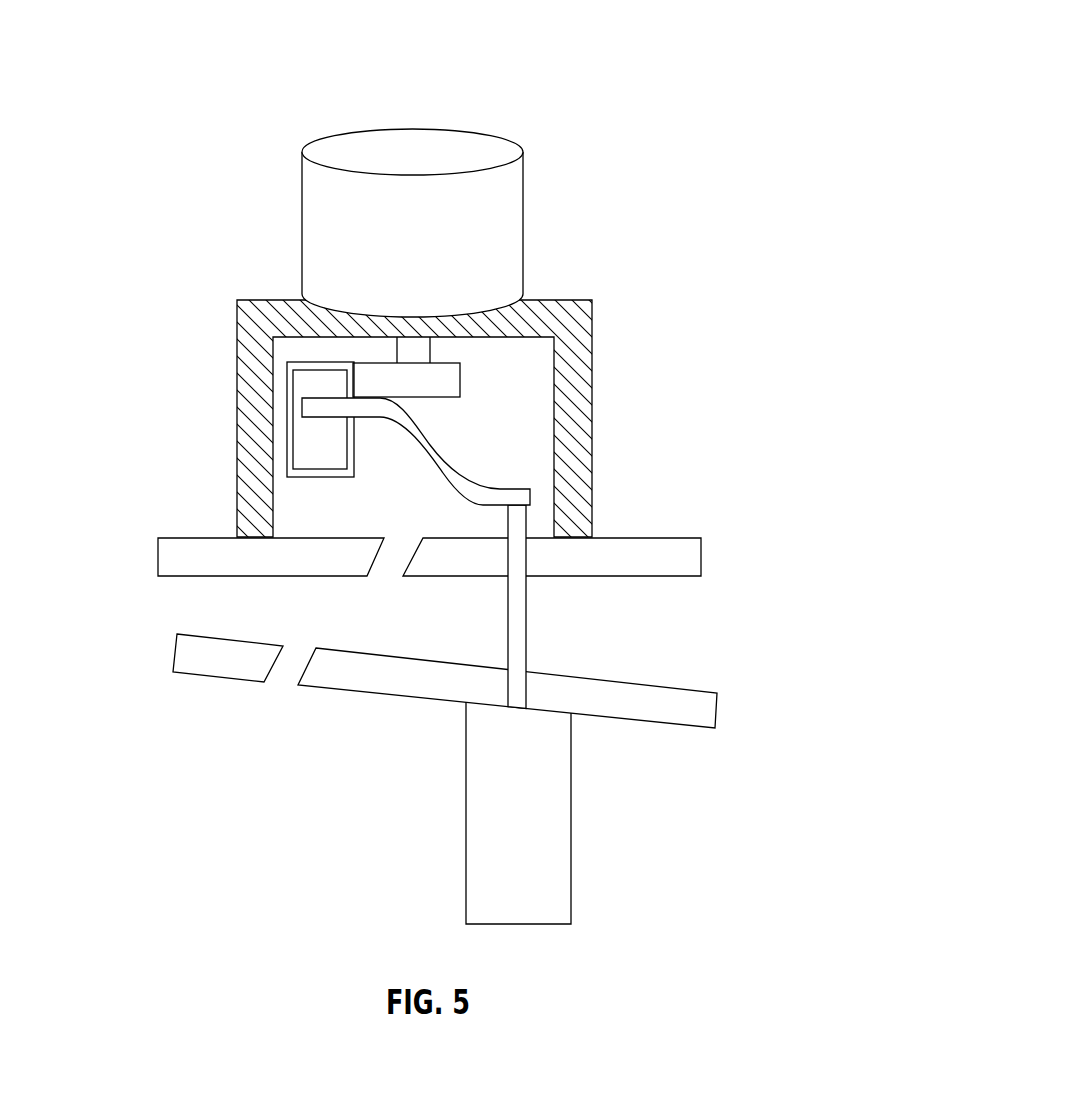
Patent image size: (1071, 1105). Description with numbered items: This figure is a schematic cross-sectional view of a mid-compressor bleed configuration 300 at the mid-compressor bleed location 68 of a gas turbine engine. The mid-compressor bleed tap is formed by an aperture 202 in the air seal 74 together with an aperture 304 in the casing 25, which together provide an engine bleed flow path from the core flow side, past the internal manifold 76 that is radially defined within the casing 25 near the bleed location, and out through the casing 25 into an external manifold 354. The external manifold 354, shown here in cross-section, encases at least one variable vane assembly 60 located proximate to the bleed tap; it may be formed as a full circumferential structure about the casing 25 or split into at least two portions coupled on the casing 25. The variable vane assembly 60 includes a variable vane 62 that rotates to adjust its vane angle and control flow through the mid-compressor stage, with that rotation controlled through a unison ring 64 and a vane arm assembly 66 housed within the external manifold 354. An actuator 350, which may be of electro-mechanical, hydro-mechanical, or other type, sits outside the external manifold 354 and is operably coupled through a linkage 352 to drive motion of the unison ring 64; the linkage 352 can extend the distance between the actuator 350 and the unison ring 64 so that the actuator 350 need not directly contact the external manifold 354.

The mid-compressor bleed configuration 300 is at (684, 86).
The actuator 350 is at (472, 128).
The linkage 352 is at (367, 372).
The variable vane assembly 60 is at (533, 366).
The unison ring 64 is at (287, 413).
The vane arm assembly 66 is at (470, 478).
The external manifold 354 is at (592, 413).
The casing 25 is at (702, 557).
The mid-compressor bleed location 68 is at (154, 605).
The aperture 304 is at (385, 568).
The aperture 202 is at (283, 680).
The internal manifold 76 is at (448, 633).
The air seal 74 is at (717, 710).
The variable vane 62 is at (571, 830).